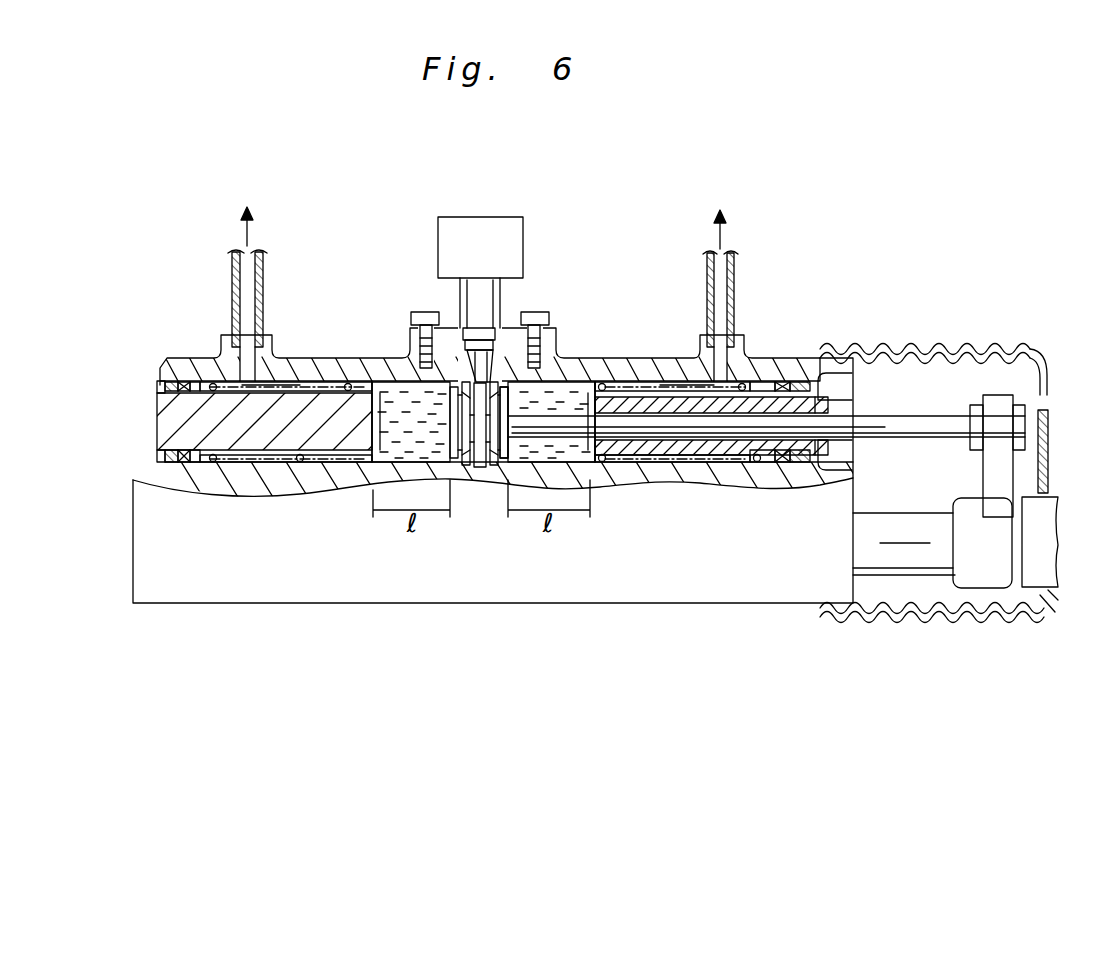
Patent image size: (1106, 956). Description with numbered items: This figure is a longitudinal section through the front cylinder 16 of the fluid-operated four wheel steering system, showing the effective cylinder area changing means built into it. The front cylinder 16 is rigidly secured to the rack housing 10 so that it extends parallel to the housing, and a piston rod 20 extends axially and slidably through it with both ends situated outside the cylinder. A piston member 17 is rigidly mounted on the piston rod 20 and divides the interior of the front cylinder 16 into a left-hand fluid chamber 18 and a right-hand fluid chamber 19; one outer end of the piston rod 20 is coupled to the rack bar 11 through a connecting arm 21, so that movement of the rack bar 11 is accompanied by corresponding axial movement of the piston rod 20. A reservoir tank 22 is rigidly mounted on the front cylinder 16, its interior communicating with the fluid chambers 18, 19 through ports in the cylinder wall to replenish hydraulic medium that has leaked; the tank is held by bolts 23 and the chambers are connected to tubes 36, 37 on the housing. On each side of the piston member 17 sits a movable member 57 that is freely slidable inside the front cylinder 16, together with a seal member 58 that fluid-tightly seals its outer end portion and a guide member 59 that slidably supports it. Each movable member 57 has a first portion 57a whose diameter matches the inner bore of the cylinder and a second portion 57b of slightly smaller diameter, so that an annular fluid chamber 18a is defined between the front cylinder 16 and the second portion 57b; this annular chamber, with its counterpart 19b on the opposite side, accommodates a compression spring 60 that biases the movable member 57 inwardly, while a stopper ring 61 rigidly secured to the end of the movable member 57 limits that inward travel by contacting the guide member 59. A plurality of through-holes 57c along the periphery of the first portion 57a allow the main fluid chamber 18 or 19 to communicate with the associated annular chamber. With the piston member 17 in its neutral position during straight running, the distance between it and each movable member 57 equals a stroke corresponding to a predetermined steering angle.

The rack housing 10 is at (373, 604).
The rack bar 11 is at (913, 550).
The front cylinder 16 is at (526, 452).
The piston member 17 is at (480, 467).
The left-hand fluid chamber 18 is at (410, 447).
The fluid chamber 18a is at (285, 381).
The right-hand fluid chamber 19 is at (560, 457).
The passage of second chamber 19b is at (688, 381).
The piston rod 20 is at (910, 430).
The connecting arm 21 is at (1010, 463).
The reservoir tank 22 is at (523, 252).
The bolt 23 is at (440, 322).
The first tube 36 is at (233, 273).
The second tube 37 is at (725, 291).
The movable member 57 is at (483, 432).
The first portion 57a is at (395, 397).
The second portion 57b is at (253, 443).
The through-holes 57c is at (365, 381).
The seal member 58 is at (185, 381).
The guide member 59 is at (168, 383).
The compression spring 60 is at (300, 467).
The stopper ring 61 is at (165, 457).